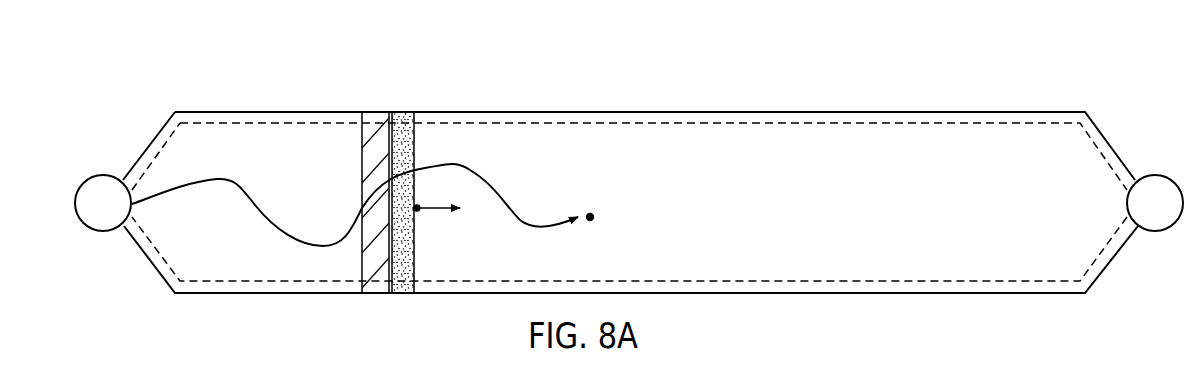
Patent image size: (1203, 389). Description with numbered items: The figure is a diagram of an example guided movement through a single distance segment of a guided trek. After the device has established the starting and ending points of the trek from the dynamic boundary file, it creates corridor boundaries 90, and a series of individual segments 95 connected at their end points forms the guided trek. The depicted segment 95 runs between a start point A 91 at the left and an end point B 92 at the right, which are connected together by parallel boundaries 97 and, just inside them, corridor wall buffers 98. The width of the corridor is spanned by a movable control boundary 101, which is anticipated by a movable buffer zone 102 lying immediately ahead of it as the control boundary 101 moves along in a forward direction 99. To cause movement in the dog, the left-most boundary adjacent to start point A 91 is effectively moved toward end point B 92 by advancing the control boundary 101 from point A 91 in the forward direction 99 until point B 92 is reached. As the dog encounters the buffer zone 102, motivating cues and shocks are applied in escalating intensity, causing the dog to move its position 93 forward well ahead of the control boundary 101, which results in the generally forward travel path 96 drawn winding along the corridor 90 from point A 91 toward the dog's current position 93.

The corridor boundaries 90 is at (529, 56).
The start point A 91 is at (88, 178).
The end point B 92 is at (1162, 176).
The position of the dog 93 is at (584, 196).
The segment 95 is at (630, 175).
The forward travel path 96 is at (237, 183).
The parallel boundaries 97 is at (572, 110).
The corridor wall buffers 98 is at (643, 121).
The forward direction 99 is at (440, 212).
The movable control boundary 101 is at (370, 150).
The movable buffer zone 102 is at (404, 146).